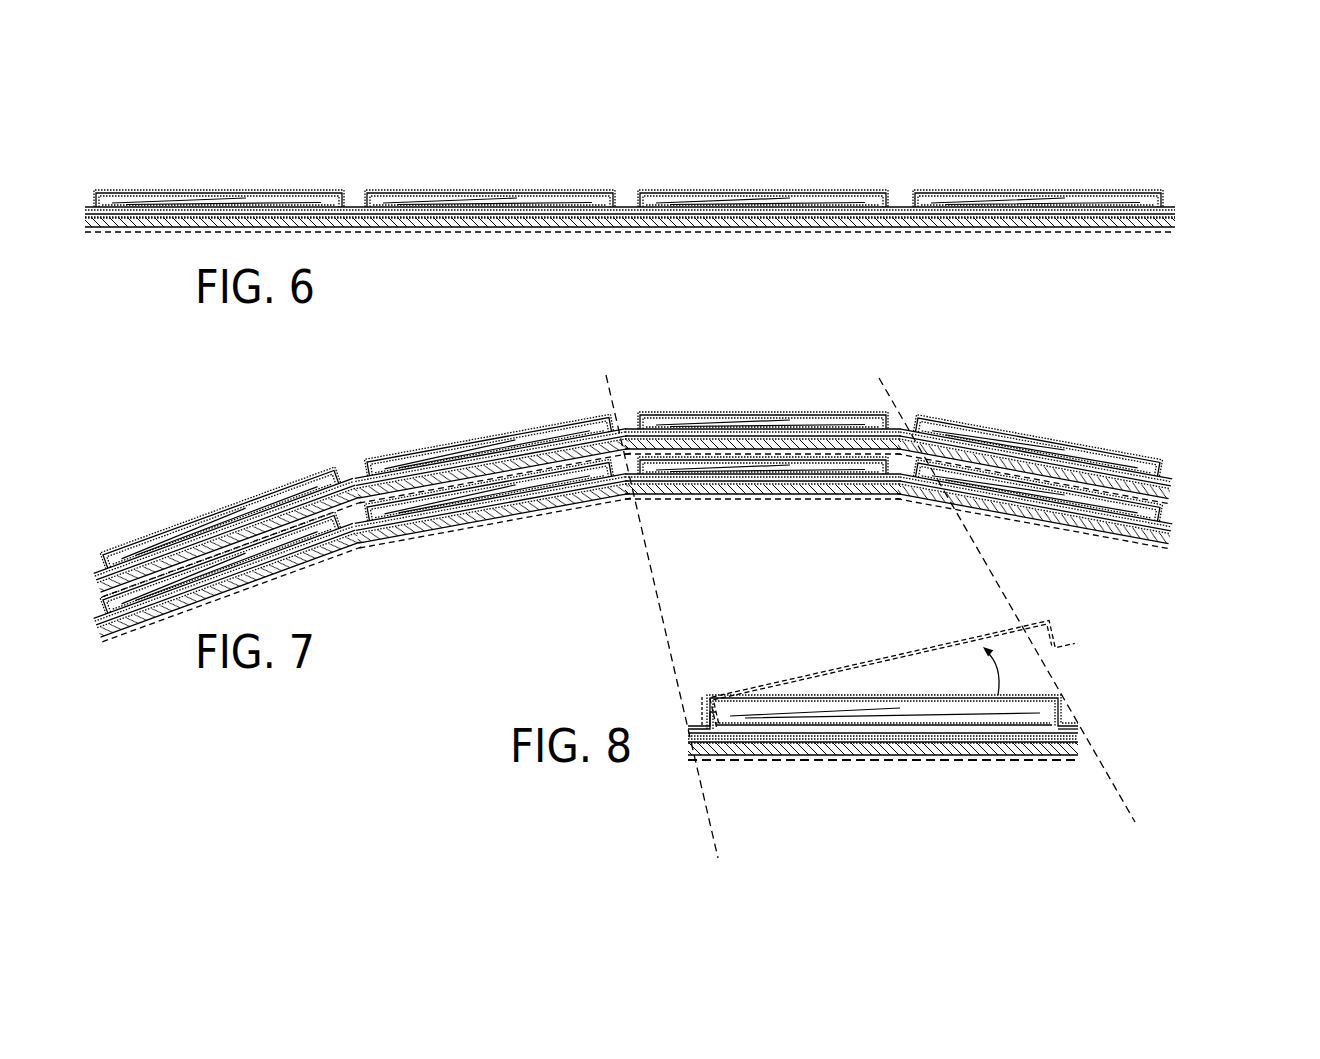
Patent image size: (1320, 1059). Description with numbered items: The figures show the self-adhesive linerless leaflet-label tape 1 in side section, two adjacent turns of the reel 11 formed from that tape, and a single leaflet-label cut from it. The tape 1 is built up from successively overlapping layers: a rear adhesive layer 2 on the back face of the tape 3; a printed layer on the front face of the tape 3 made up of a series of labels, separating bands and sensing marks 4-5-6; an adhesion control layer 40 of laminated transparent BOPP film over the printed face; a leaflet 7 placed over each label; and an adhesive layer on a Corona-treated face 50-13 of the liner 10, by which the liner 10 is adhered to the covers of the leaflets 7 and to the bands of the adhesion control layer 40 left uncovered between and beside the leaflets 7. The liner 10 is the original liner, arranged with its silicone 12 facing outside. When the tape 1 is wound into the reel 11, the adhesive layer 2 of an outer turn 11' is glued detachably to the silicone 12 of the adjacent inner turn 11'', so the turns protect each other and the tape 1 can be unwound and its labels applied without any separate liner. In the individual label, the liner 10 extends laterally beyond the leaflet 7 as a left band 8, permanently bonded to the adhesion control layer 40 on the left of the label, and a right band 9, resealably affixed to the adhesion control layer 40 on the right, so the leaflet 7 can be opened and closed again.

In FIG. 6, the self-adhesive linerless leaflet-label tape 1 is at (236, 152).
In FIG. 6, the rear adhesive layer 2 is at (975, 234).
In FIG. 7, the rear adhesive layer 2 is at (720, 457).
In FIG. 8, the rear adhesive layer 2 is at (970, 760).
In FIG. 6, the tape 3 is at (1010, 230).
In FIG. 8, the tape 3 is at (933, 752).
In FIG. 6, the labels, separating bands and sensing marks 4-5-6 is at (1050, 222).
In FIG. 8, the labels, separating bands and sensing marks 4-5-6 is at (888, 743).
In FIG. 6, the leaflet 7 is at (1133, 208).
In FIG. 8, the leaflet 7 is at (780, 718).
In FIG. 8, the left band 8 is at (697, 727).
In FIG. 8, the right band 9 is at (1077, 720).
In FIG. 6, the liner 10 is at (1077, 190).
In FIG. 7, the liner 10 is at (825, 460).
In FIG. 8, the liner 10 is at (1033, 699).
In FIG. 7, the reel 11 is at (696, 479).
In FIG. 7, the outer turn 11' is at (690, 457).
In FIG. 7, the inner turn 11'' is at (696, 549).
In FIG. 6, the silicone 12 is at (1033, 190).
In FIG. 8, the silicone 12 is at (997, 698).
In FIG. 6, the adhesion control layer 40 is at (1100, 214).
In FIG. 8, the adhesion control layer 40 is at (827, 733).
In FIG. 6, the adhesive layer and Corona treatment 50-13 is at (1157, 191).
In FIG. 8, the adhesive layer and Corona treatment 50-13 is at (1060, 700).